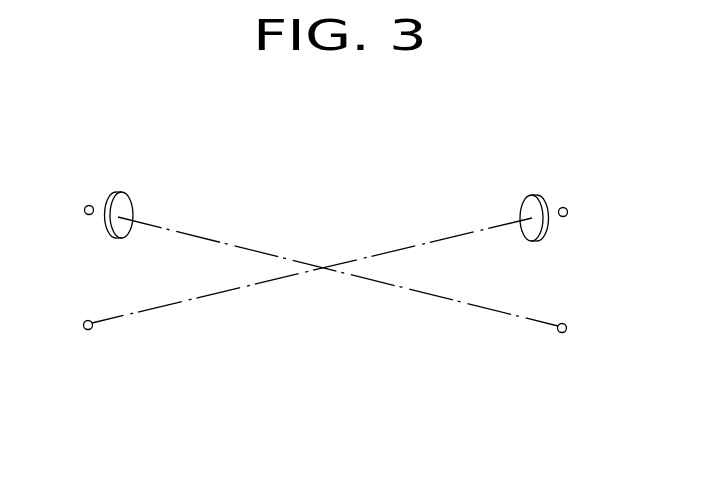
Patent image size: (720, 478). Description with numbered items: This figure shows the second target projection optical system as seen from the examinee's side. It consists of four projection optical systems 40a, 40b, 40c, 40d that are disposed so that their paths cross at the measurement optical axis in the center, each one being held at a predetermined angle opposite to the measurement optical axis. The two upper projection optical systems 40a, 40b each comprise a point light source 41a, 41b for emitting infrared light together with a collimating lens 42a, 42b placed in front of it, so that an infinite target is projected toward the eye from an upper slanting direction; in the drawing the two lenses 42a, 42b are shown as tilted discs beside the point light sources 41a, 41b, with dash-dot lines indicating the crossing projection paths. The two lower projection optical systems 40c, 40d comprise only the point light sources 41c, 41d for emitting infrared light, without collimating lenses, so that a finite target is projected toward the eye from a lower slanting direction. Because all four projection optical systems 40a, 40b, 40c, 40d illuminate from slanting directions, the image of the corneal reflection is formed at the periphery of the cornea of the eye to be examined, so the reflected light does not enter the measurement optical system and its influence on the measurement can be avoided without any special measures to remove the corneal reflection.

The projection optical system 40a is at (207, 197).
The projection optical system 40b is at (448, 197).
The projection optical system 40c is at (203, 337).
The projection optical system 40d is at (447, 337).
The point light source 41a is at (84, 213).
The point light source 41b is at (568, 216).
The point light source 41c is at (90, 330).
The point light source 41d is at (563, 333).
The collimating lens 42a is at (123, 202).
The collimating lens 42b is at (530, 198).